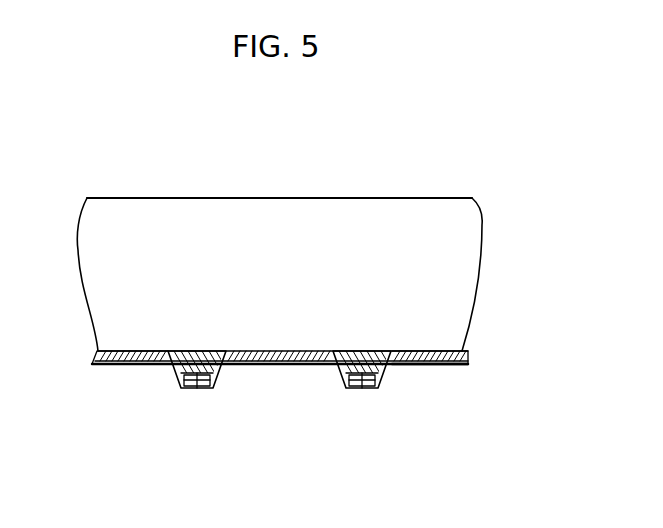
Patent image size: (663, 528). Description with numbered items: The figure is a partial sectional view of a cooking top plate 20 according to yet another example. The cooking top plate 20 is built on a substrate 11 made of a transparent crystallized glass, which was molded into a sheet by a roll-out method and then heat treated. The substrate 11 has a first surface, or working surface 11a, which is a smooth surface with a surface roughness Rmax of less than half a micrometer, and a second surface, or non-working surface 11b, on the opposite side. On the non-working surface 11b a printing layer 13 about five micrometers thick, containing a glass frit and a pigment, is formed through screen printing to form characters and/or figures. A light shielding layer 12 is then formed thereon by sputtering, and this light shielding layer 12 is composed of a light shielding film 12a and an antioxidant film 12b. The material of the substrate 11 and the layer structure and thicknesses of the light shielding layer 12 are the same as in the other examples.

The cooking top plate 20 is at (341, 291).
The substrate 11 is at (467, 222).
The first surface (working surface) 11a is at (290, 198).
The second surface (non-working surface) 11b is at (125, 364).
The light shielding layer 12 is at (468, 357).
The light shielding film 12a is at (455, 351).
The antioxidant film 12b is at (410, 365).
The printing layer 13 is at (197, 388).